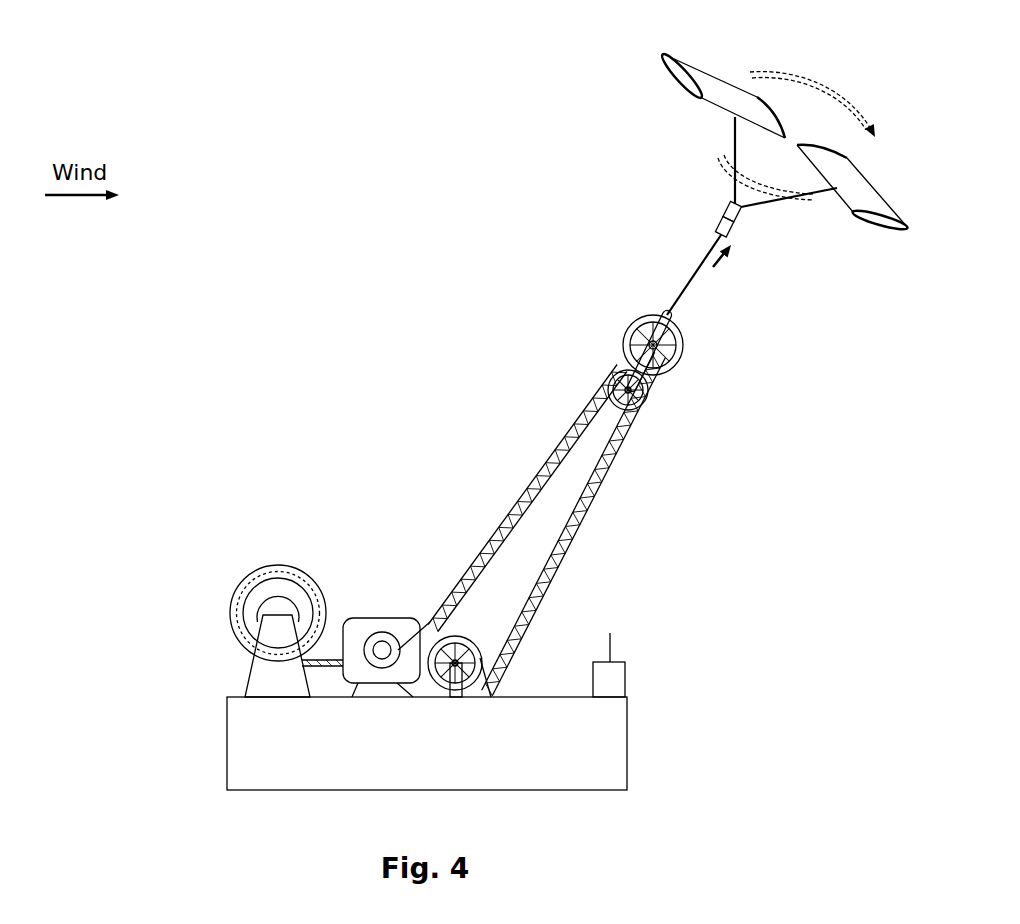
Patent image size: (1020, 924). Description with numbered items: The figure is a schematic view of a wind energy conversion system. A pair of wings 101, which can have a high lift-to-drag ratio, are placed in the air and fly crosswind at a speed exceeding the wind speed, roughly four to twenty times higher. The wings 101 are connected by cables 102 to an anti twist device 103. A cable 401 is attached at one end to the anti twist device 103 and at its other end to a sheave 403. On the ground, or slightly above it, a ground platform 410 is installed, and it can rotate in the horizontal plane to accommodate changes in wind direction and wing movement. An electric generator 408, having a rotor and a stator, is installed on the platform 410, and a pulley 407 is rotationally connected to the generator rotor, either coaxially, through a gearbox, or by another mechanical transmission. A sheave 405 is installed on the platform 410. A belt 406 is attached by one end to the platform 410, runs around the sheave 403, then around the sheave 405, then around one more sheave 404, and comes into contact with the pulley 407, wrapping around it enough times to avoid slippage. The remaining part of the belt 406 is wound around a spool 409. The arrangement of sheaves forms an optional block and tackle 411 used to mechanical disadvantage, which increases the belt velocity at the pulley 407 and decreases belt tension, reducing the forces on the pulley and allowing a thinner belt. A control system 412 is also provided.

The wings 101 is at (692, 73).
The cables 102 is at (733, 147).
The anti twist device 103 is at (695, 208).
The cable 401 is at (680, 292).
The sheave 403 is at (633, 326).
The sheave 404 is at (610, 382).
The sheave 405 is at (477, 675).
The belt 406 is at (490, 532).
The pulley 407 is at (392, 640).
The electric generator 408 is at (352, 693).
The spool 409 is at (282, 593).
The ground platform 410 is at (427, 743).
The block and tackle 411 is at (355, 374).
The control system 412 is at (613, 668).